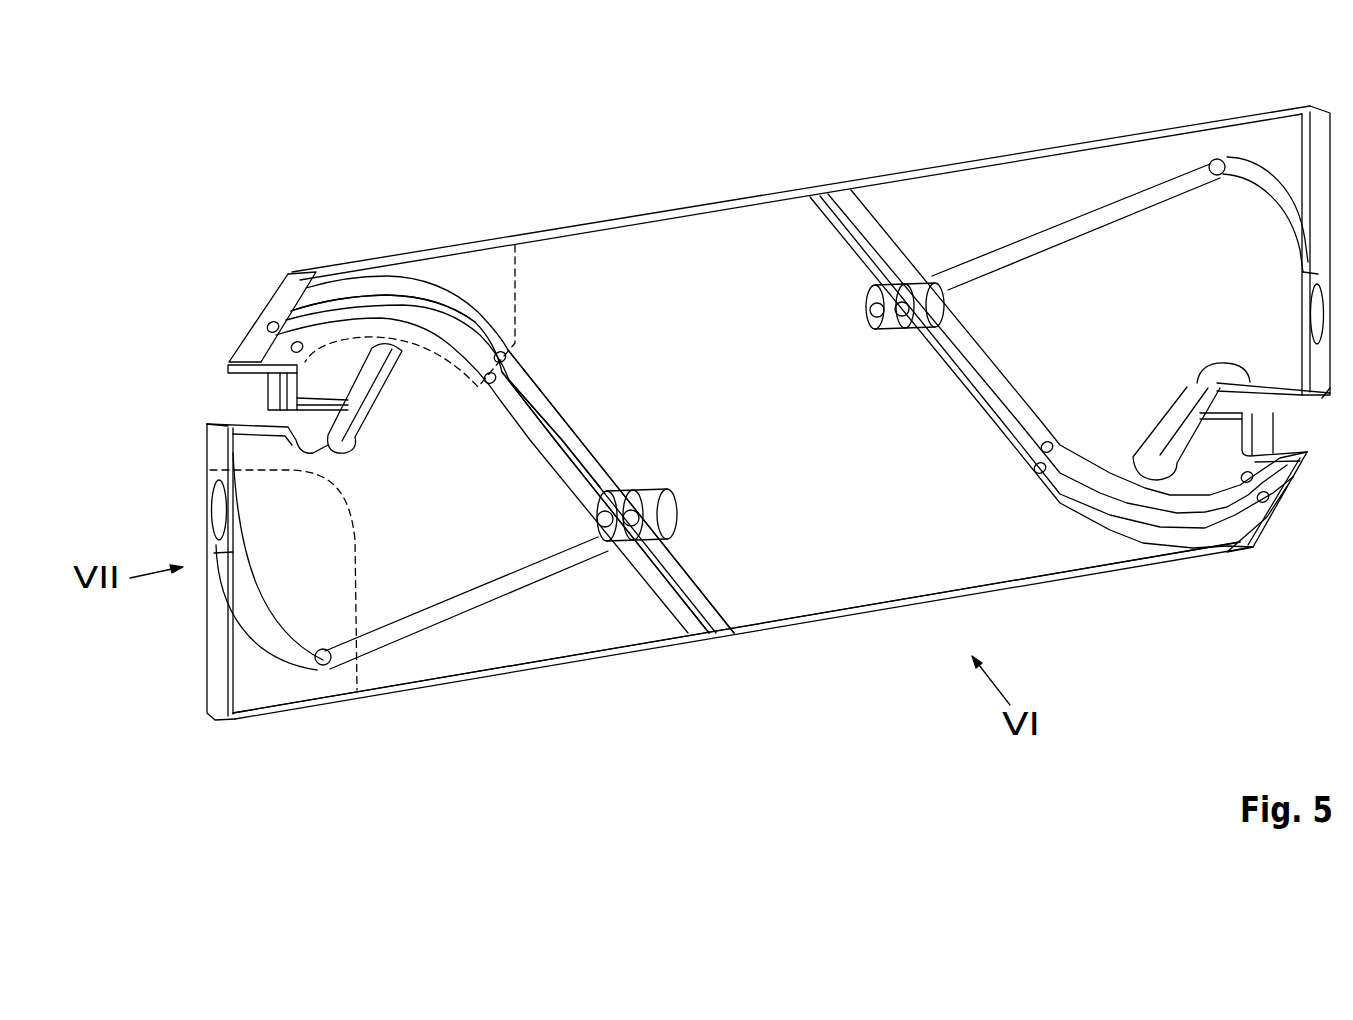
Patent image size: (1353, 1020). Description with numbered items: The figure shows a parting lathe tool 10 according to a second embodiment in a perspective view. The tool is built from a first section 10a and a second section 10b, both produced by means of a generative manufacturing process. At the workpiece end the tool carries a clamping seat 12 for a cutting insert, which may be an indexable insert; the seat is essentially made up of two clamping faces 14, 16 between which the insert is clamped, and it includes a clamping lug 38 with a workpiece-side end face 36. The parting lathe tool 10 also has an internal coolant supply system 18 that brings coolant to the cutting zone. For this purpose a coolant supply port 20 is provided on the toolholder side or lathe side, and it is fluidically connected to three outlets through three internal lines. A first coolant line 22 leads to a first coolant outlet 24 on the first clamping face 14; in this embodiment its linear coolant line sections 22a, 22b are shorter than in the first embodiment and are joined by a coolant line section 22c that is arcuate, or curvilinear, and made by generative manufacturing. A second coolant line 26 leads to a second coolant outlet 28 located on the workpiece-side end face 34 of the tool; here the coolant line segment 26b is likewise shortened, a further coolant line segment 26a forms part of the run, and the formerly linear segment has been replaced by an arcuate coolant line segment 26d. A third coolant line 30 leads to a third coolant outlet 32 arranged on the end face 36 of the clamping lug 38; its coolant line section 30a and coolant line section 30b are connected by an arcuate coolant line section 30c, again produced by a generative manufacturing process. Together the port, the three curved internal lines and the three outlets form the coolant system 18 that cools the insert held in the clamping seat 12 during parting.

The parting lathe tool 10 is at (768, 105).
The first section 10a is at (396, 243).
The second section 10b is at (299, 748).
The clamping seat 12 is at (234, 416).
The first clamping face 14 is at (243, 378).
The second clamping face 16 is at (228, 426).
The internal coolant supply system 18 is at (470, 656).
The coolant supply port 20 is at (637, 537).
The first coolant line 22 is at (518, 452).
The linear coolant line section 22a is at (532, 427).
The linear coolant line section 22b is at (262, 361).
The coolant line section 22c is at (343, 320).
The first coolant outlet 24 is at (268, 398).
The second coolant line 26 is at (430, 641).
The coolant line segment 26a is at (640, 542).
The coolant line segment 26b is at (385, 633).
The arcuate coolant line segment 26d is at (263, 637).
The second coolant outlet 28 is at (219, 508).
The third coolant line 30 is at (609, 458).
The coolant line section 30a is at (568, 437).
The coolant line section 30b is at (270, 320).
The arcuate coolant line section 30c is at (424, 294).
The third coolant outlet 32 is at (268, 334).
The end face 34 is at (219, 620).
The workpiece-side end face 36 is at (297, 288).
The clamping lug 38 is at (259, 284).